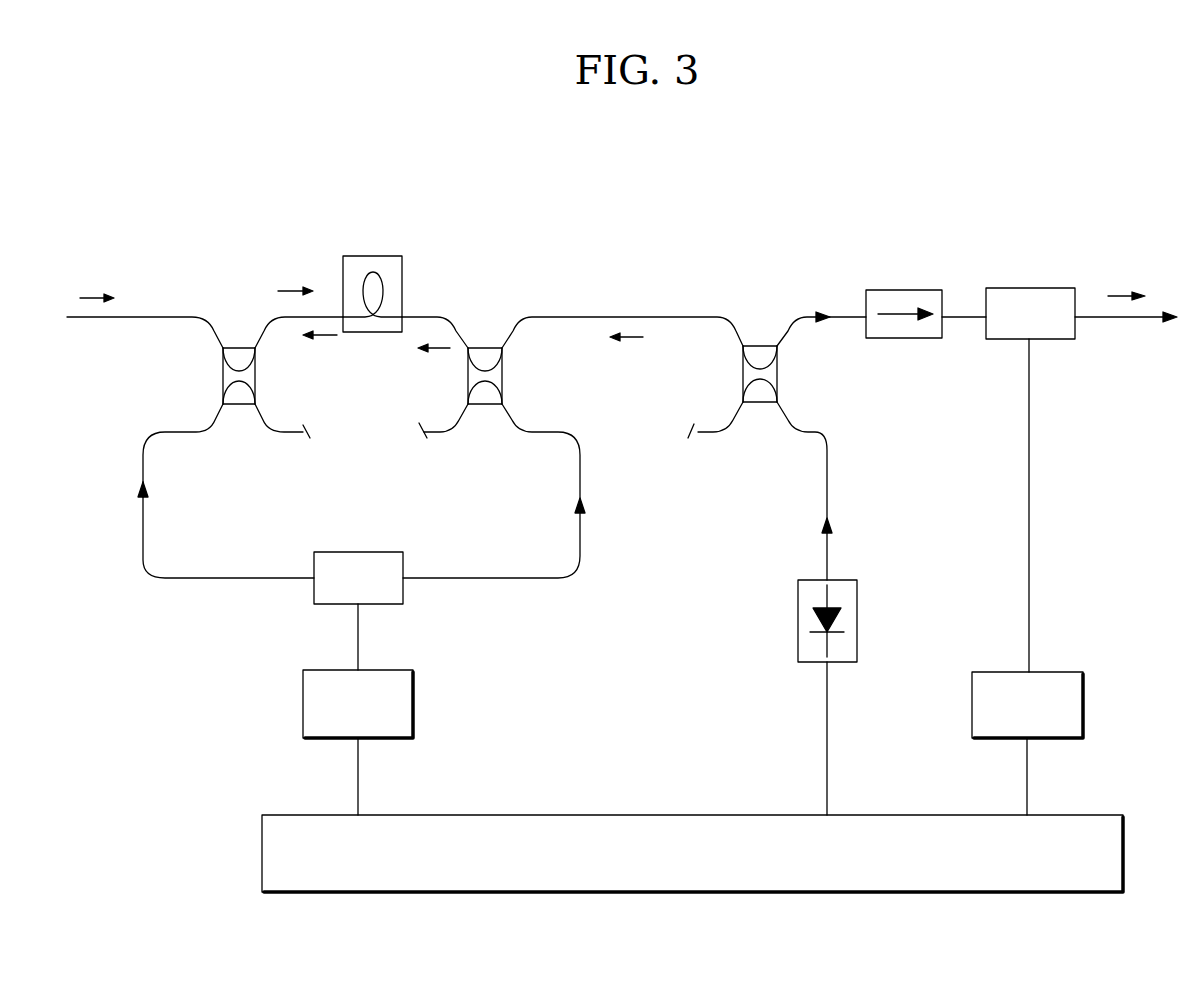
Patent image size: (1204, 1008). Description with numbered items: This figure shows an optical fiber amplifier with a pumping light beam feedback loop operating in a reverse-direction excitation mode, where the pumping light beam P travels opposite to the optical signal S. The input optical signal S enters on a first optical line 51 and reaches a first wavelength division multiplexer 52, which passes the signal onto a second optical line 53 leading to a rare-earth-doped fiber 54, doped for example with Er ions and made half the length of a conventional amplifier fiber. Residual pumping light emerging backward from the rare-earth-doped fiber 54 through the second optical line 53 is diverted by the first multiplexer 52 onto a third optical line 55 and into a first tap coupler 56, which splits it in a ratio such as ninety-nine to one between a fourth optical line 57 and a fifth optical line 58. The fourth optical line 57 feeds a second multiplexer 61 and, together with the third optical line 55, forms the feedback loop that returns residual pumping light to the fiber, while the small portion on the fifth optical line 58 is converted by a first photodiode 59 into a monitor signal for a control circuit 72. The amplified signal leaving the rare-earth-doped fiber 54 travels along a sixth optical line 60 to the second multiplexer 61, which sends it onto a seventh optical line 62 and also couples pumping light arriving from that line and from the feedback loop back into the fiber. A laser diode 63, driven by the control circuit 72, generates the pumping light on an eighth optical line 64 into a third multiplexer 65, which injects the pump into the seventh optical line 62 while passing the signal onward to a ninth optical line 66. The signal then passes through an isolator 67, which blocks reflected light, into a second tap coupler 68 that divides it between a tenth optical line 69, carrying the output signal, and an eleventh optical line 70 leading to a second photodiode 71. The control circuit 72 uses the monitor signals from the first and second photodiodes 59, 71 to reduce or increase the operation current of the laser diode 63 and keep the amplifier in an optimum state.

The first optical line 51 is at (120, 319).
The first wavelength division multiplexer 52 is at (233, 406).
The second optical line 53 is at (270, 321).
The rare-earth-doped fiber 54 is at (372, 256).
The third optical line 55 is at (148, 441).
The first tap coupler 56 is at (360, 552).
The fourth optical line 57 is at (563, 583).
The fifth optical line 58 is at (362, 630).
The first photodiode 59 is at (417, 700).
The sixth optical line 60 is at (424, 313).
The second multiplexer 61 is at (483, 347).
The seventh optical line 62 is at (623, 313).
The laser diode 63 is at (797, 620).
The eighth optical line 64 is at (828, 438).
The third multiplexer 65 is at (763, 345).
The ninth optical line 66 is at (801, 316).
The isolator 67 is at (905, 290).
The second tap coupler 68 is at (1033, 288).
The tenth optical line 69 is at (1117, 319).
The eleventh optical line 70 is at (1022, 502).
The second photodiode 71 is at (970, 708).
The control circuit 72 is at (645, 815).